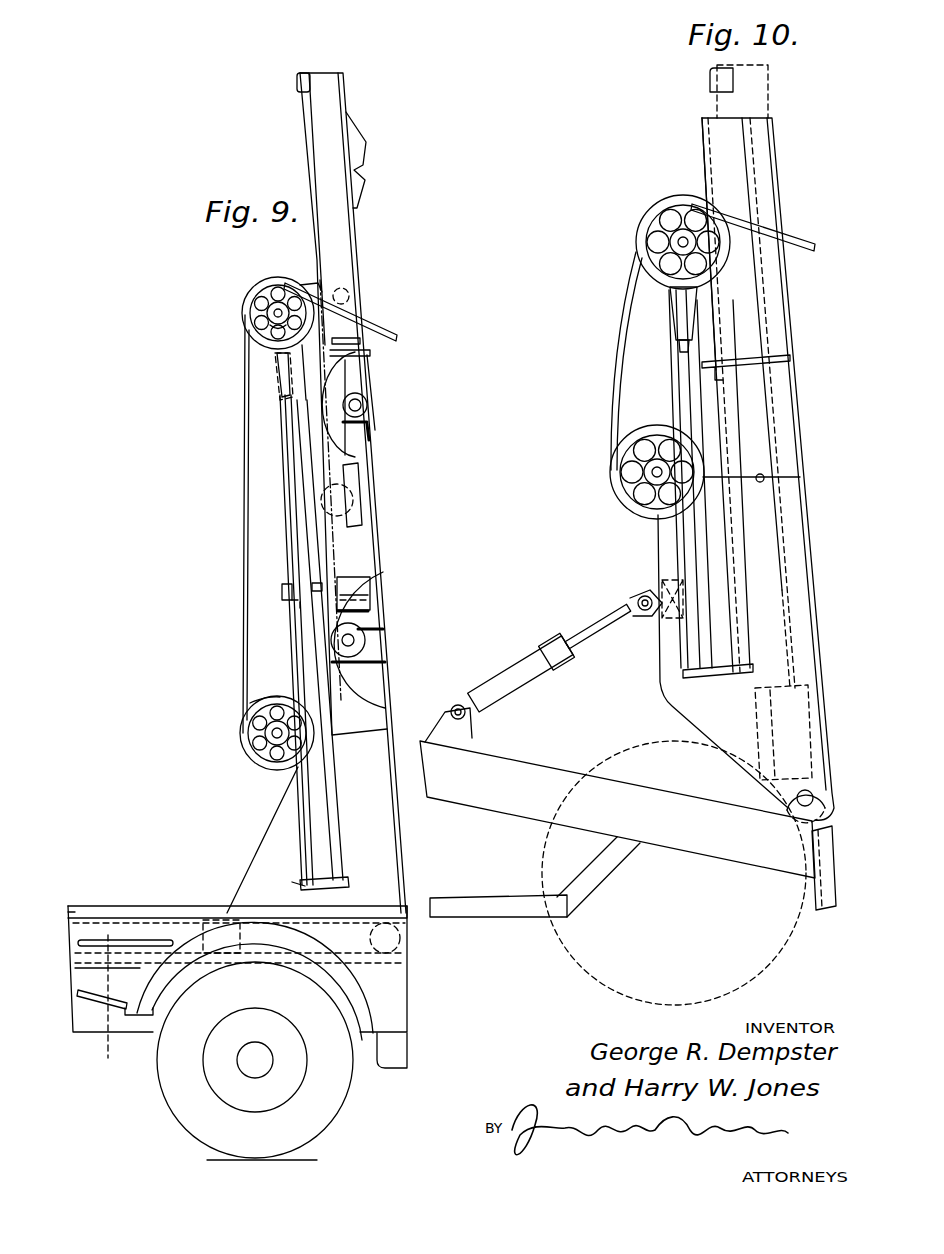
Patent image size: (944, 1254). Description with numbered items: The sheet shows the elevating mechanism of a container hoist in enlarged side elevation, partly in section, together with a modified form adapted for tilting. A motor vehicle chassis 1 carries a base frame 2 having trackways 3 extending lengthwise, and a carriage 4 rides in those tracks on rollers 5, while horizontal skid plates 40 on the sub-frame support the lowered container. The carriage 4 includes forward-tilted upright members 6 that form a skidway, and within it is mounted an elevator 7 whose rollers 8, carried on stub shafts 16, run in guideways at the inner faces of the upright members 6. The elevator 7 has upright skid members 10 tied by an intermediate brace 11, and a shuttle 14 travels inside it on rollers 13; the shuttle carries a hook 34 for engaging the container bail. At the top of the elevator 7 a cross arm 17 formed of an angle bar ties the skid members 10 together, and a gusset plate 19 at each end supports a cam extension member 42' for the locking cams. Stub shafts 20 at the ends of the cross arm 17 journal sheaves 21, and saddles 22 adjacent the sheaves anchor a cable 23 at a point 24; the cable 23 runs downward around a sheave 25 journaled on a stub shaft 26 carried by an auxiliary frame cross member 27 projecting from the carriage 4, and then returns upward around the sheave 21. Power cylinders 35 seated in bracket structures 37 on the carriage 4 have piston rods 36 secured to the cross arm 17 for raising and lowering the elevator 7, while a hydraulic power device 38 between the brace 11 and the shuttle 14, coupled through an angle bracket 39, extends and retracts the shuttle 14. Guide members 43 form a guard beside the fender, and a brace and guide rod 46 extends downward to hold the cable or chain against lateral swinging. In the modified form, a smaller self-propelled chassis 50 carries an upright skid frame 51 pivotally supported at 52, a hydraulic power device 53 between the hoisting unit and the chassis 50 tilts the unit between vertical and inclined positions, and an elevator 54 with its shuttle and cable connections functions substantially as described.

In FIG. 9, the chassis 1 is at (80, 1038).
In FIG. 9, the base frame 2 is at (93, 925).
In FIG. 9, the trackways 3 is at (113, 1002).
In FIG. 9, the carriage 4 is at (266, 822).
In FIG. 9, the rollers 5 is at (205, 912).
In FIG. 9, the upright members 6 is at (378, 720).
In FIG. 9, the elevator 7 is at (315, 538).
In FIG. 9, the rollers 8 is at (362, 518).
In FIG. 9, the upright skid members 10 is at (360, 598).
In FIG. 9, the intermediate brace 11 is at (362, 608).
In FIG. 9, the rollers 13 is at (350, 296).
In FIG. 9, the shuttle 14 is at (375, 385).
In FIG. 9, the stub shafts 16 is at (365, 628).
In FIG. 9, the cross arm 17 is at (266, 325).
In FIG. 9, the gusset plate 19 is at (308, 283).
In FIG. 9, the stub shafts 20 is at (268, 311).
In FIG. 10, the stub shafts 20 is at (668, 242).
In FIG. 9, the sheaves 21 is at (262, 290).
In FIG. 10, the sheaves 21 is at (645, 215).
In FIG. 9, the saddles 22 is at (340, 290).
In FIG. 9, the cable 23 is at (246, 505).
In FIG. 10, the cable 23 is at (622, 385).
In FIG. 9, the cable securing point 24 is at (280, 365).
In FIG. 9, the sheave 25 is at (245, 737).
In FIG. 10, the sheave 25 is at (618, 478).
In FIG. 9, the stub shaft 26 is at (272, 736).
In FIG. 10, the stub shaft 26 is at (652, 474).
In FIG. 9, the auxiliary frame cross member 27 is at (276, 698).
In FIG. 9, the hook 34 is at (366, 182).
In FIG. 9, the power cylinders 35 is at (292, 606).
In FIG. 9, the piston rods 36 is at (304, 452).
In FIG. 9, the bracket structures 37 is at (298, 885).
In FIG. 9, the hydraulic power device 38 is at (346, 372).
In FIG. 9, the angle bracket 39 is at (297, 86).
In FIG. 9, the skid plates 40 is at (73, 913).
In FIG. 9, the cam extension member 42' is at (392, 342).
In FIG. 9, the guide members 43 is at (135, 940).
In FIG. 9, the brace and guide rod 46 is at (93, 925).
In FIG. 10, the chassis 50 is at (525, 768).
In FIG. 10, the upright skid frame 51 is at (800, 440).
In FIG. 10, the pivotal support 52 is at (785, 792).
In FIG. 10, the hydraulic power device 53 is at (510, 667).
In FIG. 10, the elevator 54 is at (706, 170).